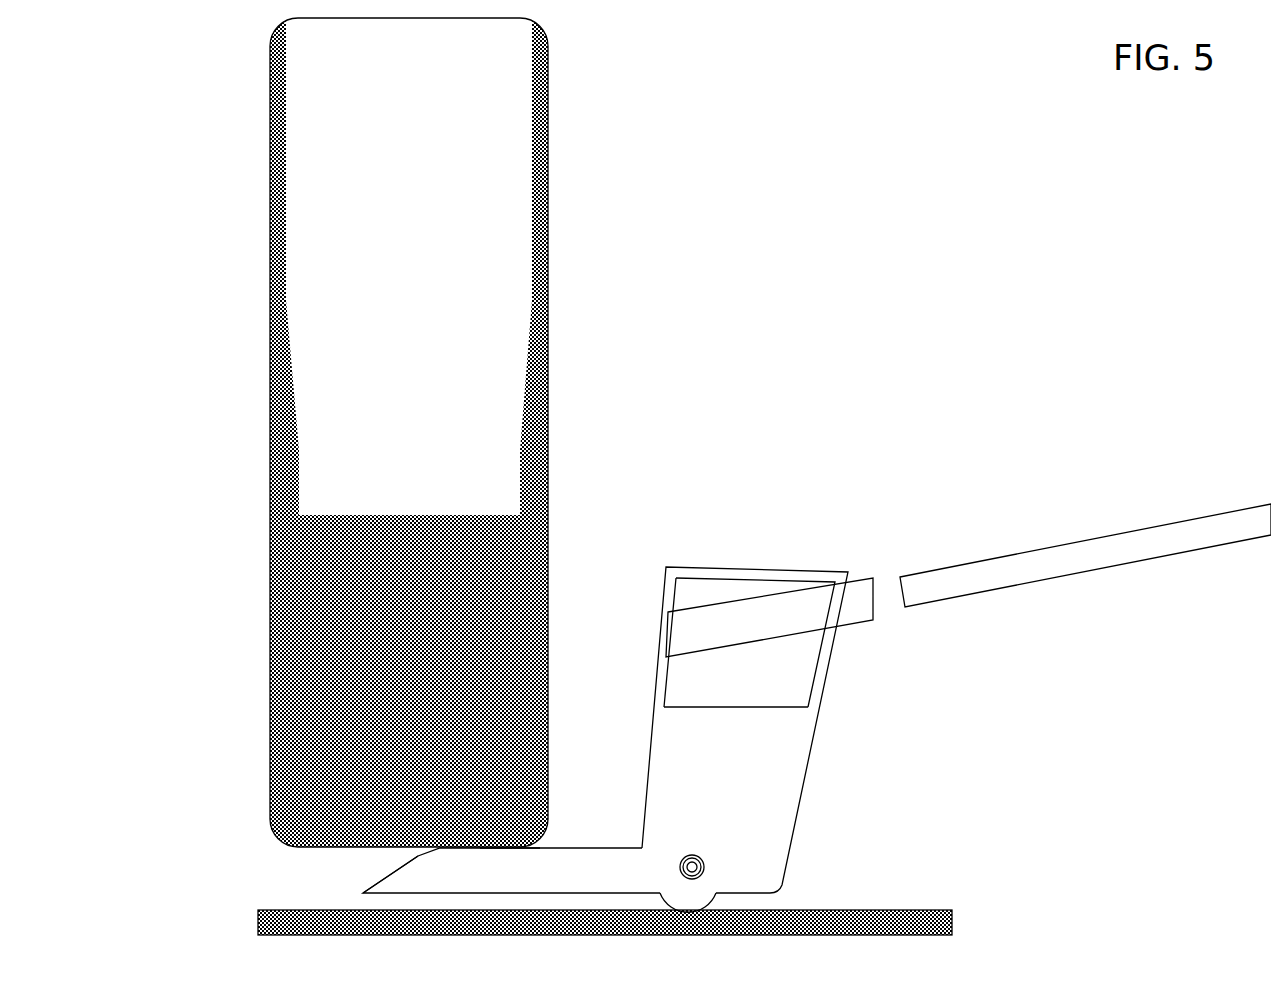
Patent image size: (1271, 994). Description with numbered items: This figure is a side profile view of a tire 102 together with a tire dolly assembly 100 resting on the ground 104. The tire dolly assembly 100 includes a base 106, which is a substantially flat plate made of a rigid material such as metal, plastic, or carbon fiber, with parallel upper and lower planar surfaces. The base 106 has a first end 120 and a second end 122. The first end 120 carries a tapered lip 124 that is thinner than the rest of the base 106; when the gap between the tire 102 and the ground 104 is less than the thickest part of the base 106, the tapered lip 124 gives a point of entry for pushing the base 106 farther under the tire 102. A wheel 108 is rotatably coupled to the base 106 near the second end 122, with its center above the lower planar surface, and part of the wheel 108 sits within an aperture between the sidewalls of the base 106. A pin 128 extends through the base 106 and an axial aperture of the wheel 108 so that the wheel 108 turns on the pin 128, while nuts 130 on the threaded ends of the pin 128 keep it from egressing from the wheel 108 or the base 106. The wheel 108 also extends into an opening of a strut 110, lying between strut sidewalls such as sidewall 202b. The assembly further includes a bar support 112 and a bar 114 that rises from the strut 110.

The tire dolly assembly 100 is at (808, 292).
The tire 102 is at (413, 180).
The ground 104 is at (271, 905).
The base 106 is at (460, 862).
The wheel 108 is at (700, 895).
The strut 110 is at (756, 739).
The bar support 112 is at (725, 632).
The bar 114 is at (977, 573).
The first end 120 is at (502, 860).
The second end 122 is at (742, 890).
The tapered lip 124 is at (405, 862).
The pin 128 is at (690, 867).
The nuts 130 is at (689, 858).
The sidewall 202b is at (688, 764).